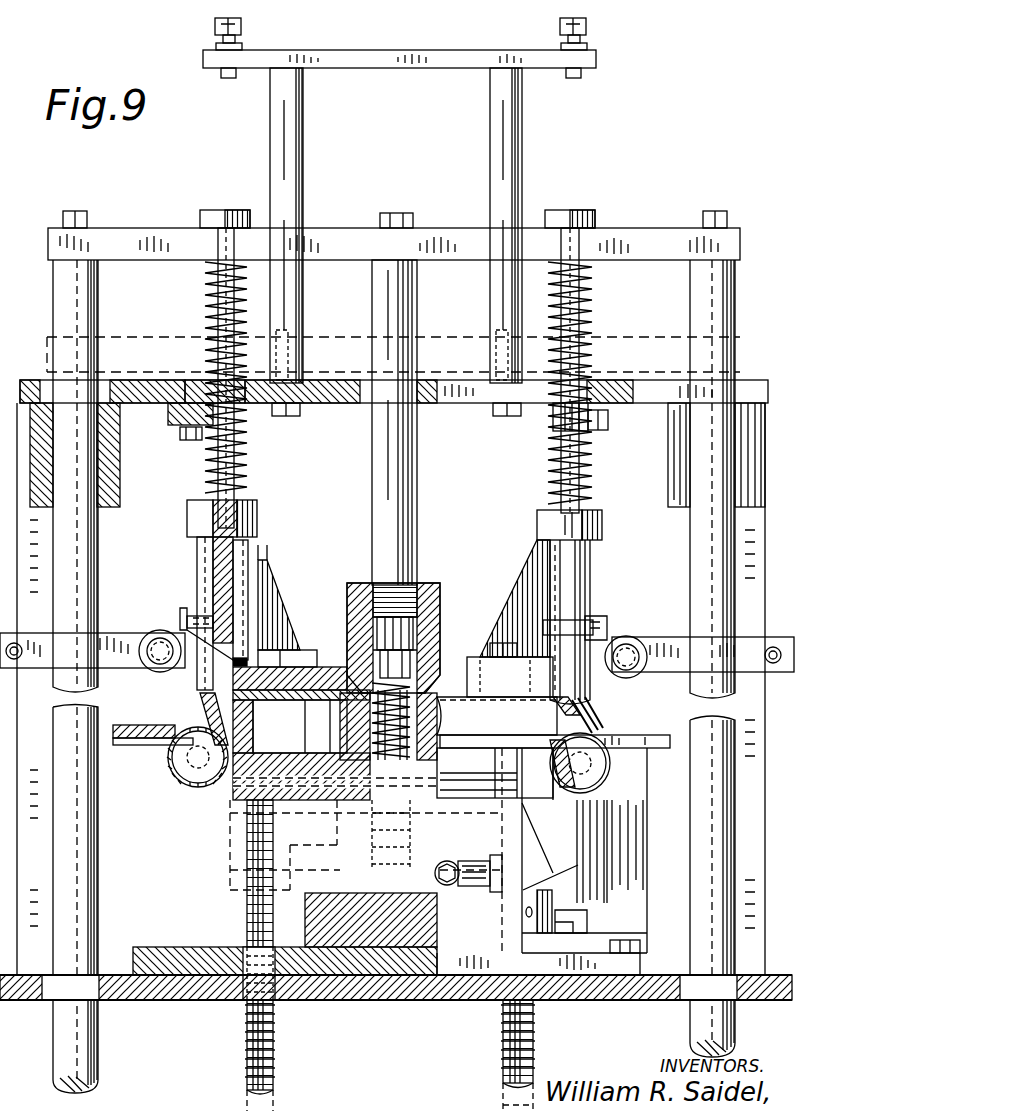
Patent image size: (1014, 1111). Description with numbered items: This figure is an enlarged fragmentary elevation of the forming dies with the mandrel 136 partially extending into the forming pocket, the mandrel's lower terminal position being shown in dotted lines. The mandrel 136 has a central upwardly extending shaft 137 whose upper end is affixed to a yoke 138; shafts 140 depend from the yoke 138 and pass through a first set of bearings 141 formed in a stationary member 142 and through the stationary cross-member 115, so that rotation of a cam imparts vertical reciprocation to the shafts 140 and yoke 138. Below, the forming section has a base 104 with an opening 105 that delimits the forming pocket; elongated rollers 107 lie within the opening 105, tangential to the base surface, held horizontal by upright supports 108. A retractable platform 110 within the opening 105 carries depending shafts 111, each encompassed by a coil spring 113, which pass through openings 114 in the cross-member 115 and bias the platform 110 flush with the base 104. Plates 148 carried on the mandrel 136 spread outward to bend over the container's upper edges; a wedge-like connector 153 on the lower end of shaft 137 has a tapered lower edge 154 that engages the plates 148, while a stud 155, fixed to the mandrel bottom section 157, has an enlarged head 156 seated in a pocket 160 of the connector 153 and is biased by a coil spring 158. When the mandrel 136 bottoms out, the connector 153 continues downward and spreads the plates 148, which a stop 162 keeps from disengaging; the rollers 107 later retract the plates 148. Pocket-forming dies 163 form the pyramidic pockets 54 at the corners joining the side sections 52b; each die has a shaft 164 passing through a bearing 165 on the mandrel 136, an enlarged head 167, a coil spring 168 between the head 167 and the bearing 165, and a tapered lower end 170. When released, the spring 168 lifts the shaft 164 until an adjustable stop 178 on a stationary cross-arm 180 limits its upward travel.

The stationary cross-arm 180 is at (420, 68).
The adjustable stop 178 is at (228, 78).
The yoke 138 is at (345, 228).
The enlarged head 167 is at (228, 177).
The shaft 164 is at (210, 288).
The coil spring 168 is at (590, 360).
The stationary member 142 is at (158, 406).
The bearings 141 is at (150, 466).
The shafts 140 is at (752, 284).
The shaft 137 is at (412, 508).
The bearing 165 is at (198, 548).
The connector 153 is at (432, 605).
The pocket 160 is at (378, 615).
The stud 155 is at (385, 628).
The enlarged head 156 is at (418, 595).
The tapered lower edge 154 is at (425, 690).
The plates 148 is at (280, 648).
The coil spring 158 is at (343, 678).
The bottom section 157 is at (290, 752).
The mandrel 136 is at (235, 797).
The stop 162 is at (182, 612).
The pocket-forming dies 163 is at (197, 690).
The side sections 52b is at (200, 693).
The pocket portions 54 is at (600, 705).
The opening 105 is at (178, 727).
The base 104 is at (125, 746).
The rollers 107 is at (596, 745).
The lower end 170 is at (550, 717).
The upright supports 108 is at (640, 815).
The platform 110 is at (247, 803).
The openings 114 is at (238, 1003).
The cross-member 115 is at (340, 1002).
The coil springs 113 is at (245, 1074).
The shafts 111 is at (245, 1092).